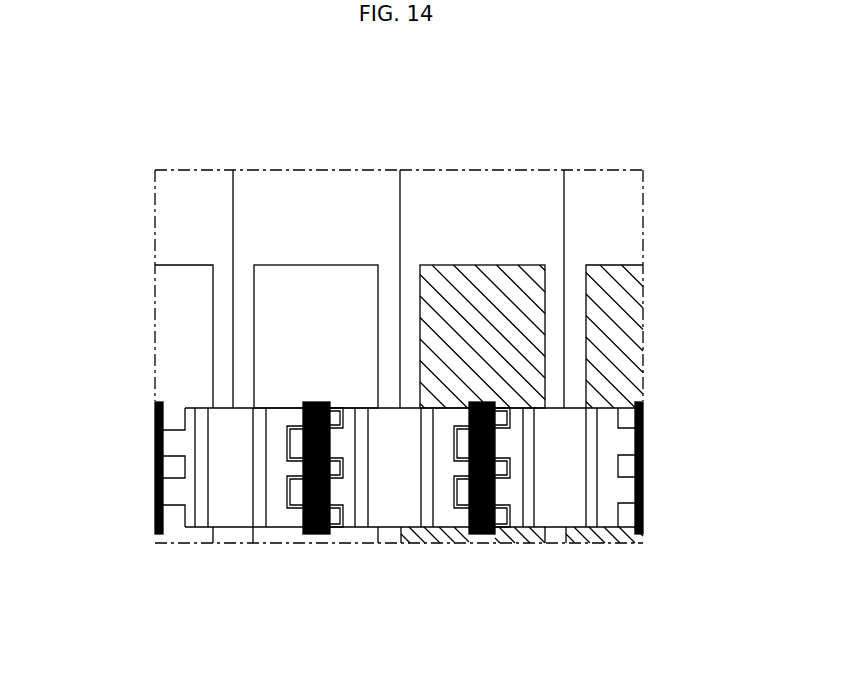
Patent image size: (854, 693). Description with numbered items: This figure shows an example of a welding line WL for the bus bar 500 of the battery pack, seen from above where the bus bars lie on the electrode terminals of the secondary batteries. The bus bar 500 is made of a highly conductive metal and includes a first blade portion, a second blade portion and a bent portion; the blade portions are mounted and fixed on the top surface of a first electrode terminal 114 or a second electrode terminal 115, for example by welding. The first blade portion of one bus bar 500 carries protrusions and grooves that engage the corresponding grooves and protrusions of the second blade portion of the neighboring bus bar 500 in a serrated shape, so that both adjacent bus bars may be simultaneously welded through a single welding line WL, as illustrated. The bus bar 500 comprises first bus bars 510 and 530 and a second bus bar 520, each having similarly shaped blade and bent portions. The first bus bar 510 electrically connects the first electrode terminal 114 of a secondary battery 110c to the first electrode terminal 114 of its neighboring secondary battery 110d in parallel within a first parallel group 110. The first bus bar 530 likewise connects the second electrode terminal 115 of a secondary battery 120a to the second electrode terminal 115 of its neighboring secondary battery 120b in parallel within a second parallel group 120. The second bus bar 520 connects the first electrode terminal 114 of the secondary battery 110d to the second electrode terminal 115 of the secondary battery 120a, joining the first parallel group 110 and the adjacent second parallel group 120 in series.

The first parallel group 110 is at (172, 102).
The secondary battery 110c is at (193, 188).
The secondary battery 110d is at (289, 188).
The first electrode terminal 114 is at (265, 302).
The second electrode terminal 115 is at (535, 301).
The second parallel group 120 is at (482, 102).
The secondary battery 120a is at (503, 188).
The secondary battery 120b is at (598, 188).
The bus bar 500 is at (313, 616).
The first bus bar 510 is at (227, 511).
The second bus bar 520 is at (392, 512).
The first bus bar 530 is at (560, 512).
The welding line WL is at (298, 492).